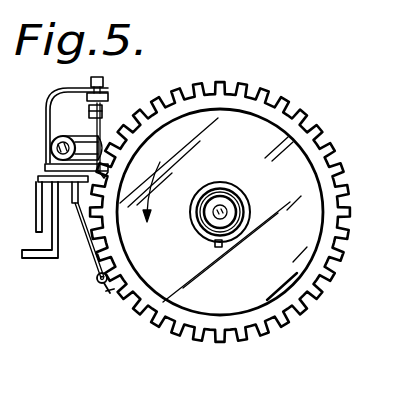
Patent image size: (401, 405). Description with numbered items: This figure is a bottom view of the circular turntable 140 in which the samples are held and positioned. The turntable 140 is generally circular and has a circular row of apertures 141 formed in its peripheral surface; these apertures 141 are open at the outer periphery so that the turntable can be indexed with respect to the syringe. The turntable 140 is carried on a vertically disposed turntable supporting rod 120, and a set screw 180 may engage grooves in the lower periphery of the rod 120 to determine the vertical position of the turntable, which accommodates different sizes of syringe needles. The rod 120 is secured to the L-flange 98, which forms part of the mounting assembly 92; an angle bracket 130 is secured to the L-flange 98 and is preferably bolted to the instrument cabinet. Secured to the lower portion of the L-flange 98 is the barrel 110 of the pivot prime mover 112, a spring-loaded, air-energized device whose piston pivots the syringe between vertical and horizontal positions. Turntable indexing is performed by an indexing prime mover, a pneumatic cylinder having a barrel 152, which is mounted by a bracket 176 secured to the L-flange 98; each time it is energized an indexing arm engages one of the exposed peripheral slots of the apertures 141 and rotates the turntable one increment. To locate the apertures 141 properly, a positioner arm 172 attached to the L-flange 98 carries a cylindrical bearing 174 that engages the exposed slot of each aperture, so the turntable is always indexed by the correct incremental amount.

The mounting assembly 92 is at (37, 220).
The L-flange 98 is at (68, 204).
The barrel 110 is at (76, 131).
The pivot prime mover 112 is at (52, 128).
The turntable supporting rod 120 is at (220, 212).
The angle bracket 130 is at (50, 166).
The turntable 140 is at (228, 175).
The apertures 141 is at (318, 137).
The barrel 152 is at (110, 85).
The positioner arm 172 is at (91, 253).
The cylindrical bearing 174 is at (103, 290).
The bracket 176 is at (57, 106).
The set screw 180 is at (216, 244).